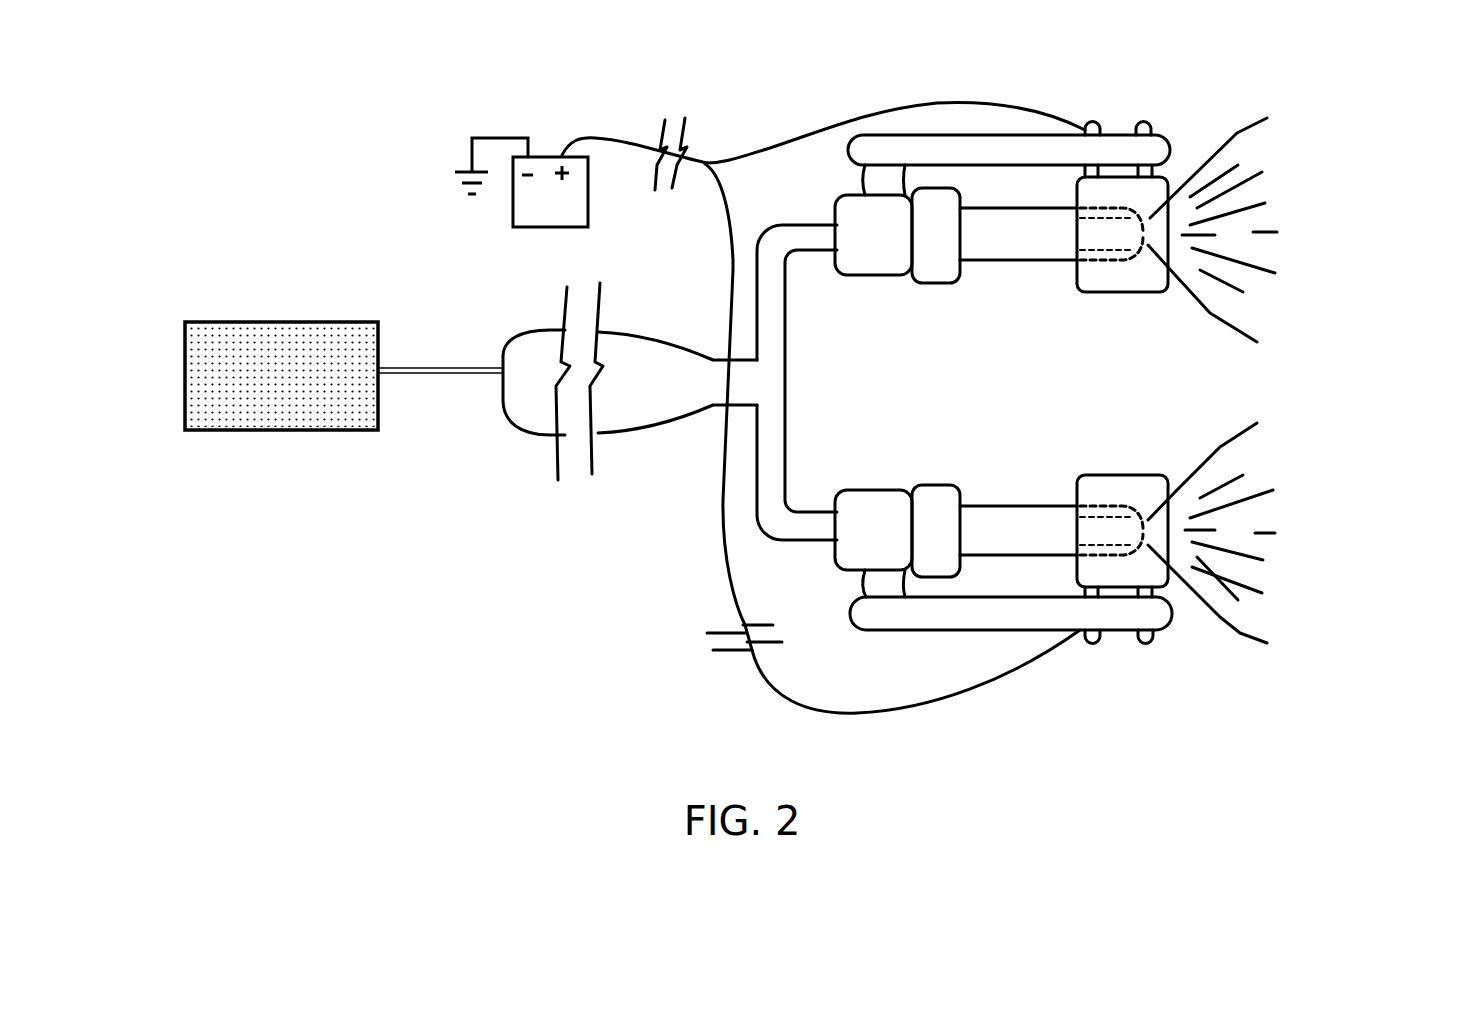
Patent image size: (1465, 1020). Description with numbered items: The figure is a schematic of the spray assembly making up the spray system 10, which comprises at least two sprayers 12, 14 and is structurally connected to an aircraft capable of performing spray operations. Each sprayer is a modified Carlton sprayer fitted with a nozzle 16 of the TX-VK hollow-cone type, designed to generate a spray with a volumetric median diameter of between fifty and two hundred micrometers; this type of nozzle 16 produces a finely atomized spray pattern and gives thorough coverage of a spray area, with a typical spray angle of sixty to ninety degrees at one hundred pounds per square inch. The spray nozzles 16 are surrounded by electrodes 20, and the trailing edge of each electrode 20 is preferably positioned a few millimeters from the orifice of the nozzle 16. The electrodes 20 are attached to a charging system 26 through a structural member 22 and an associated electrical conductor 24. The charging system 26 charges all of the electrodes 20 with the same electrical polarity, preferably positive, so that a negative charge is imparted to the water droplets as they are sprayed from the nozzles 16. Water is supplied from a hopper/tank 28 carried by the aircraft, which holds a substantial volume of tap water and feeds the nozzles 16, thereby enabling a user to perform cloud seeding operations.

The spray system 10 is at (330, 222).
The sprayer 12 is at (1328, 178).
The sprayer 14 is at (1302, 600).
The nozzle 16 is at (1137, 218).
The electrode 20 is at (1125, 295).
The structural member 22 is at (1113, 133).
The electrical conductor 24 is at (592, 132).
The charging system 26 is at (522, 227).
The hopper/tank 28 is at (185, 378).